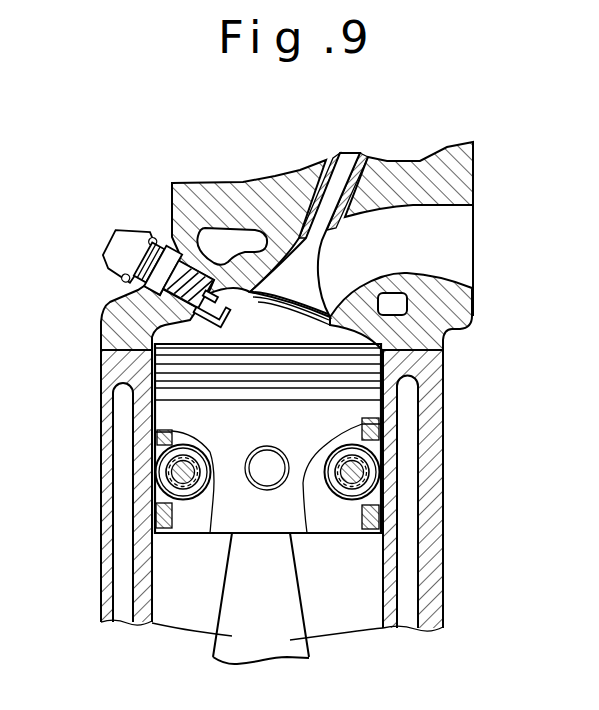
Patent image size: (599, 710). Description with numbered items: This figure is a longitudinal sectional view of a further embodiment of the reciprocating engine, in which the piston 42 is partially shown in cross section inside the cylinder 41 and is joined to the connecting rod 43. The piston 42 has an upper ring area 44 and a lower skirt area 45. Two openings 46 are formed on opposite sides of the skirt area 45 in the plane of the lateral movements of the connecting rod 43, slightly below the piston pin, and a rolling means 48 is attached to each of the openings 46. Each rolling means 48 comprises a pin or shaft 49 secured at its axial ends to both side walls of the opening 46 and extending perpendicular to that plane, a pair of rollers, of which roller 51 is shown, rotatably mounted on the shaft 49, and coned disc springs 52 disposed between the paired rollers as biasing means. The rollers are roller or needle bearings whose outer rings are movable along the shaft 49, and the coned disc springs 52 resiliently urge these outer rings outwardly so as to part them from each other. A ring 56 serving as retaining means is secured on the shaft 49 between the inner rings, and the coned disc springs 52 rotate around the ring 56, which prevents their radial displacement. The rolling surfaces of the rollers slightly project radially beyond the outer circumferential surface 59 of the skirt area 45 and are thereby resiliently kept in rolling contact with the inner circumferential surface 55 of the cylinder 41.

The cylinder 41 is at (390, 403).
The piston 42 is at (170, 413).
The connecting rod 43 is at (296, 650).
The ring area 44 is at (150, 371).
The skirt area 45 is at (160, 527).
The openings 46 is at (162, 498).
The rolling means 48 is at (176, 470).
The pin or shaft 49 is at (190, 497).
The roller 51 is at (157, 448).
The coned disc springs 52 is at (200, 497).
The inner circumferential surface 55 is at (385, 599).
The ring 56 is at (211, 466).
The outer circumferential surface 59 is at (382, 526).